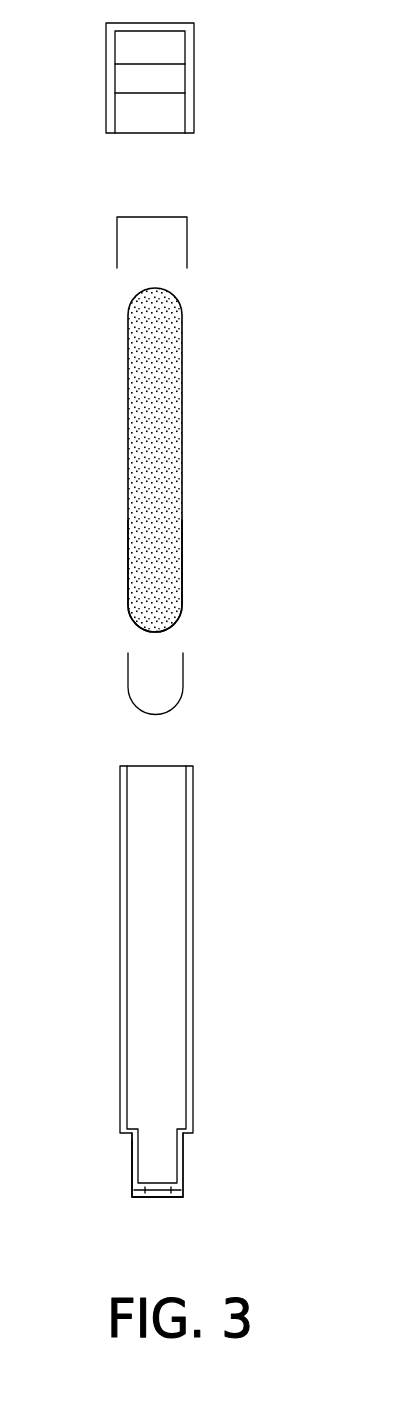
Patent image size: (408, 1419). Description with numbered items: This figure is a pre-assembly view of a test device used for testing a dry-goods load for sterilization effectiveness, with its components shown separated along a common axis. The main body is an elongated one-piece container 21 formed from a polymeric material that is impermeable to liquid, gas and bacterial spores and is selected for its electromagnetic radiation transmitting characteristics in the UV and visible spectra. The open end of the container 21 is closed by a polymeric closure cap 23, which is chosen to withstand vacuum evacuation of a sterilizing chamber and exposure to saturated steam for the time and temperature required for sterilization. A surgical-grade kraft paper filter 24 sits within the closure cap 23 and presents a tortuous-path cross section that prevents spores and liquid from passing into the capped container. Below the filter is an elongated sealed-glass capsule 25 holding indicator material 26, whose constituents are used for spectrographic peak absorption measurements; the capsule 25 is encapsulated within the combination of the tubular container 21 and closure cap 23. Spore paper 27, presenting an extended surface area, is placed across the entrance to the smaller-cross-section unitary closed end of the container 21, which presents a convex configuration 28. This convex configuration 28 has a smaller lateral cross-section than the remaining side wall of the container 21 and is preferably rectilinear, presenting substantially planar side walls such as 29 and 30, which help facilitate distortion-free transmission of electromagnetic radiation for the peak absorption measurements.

The elongated one-piece container 21 is at (194, 952).
The polymeric closure cap 23 is at (196, 77).
The surgical-grade kraft paper filter 24 is at (191, 243).
The elongated sealed-glass capsule 25 is at (183, 455).
The indicator material 26 is at (180, 540).
The spore paper 27 is at (186, 685).
The convex configuration 28 is at (179, 1188).
The planar side wall 29 is at (133, 1168).
The planar side wall 30 is at (183, 1156).